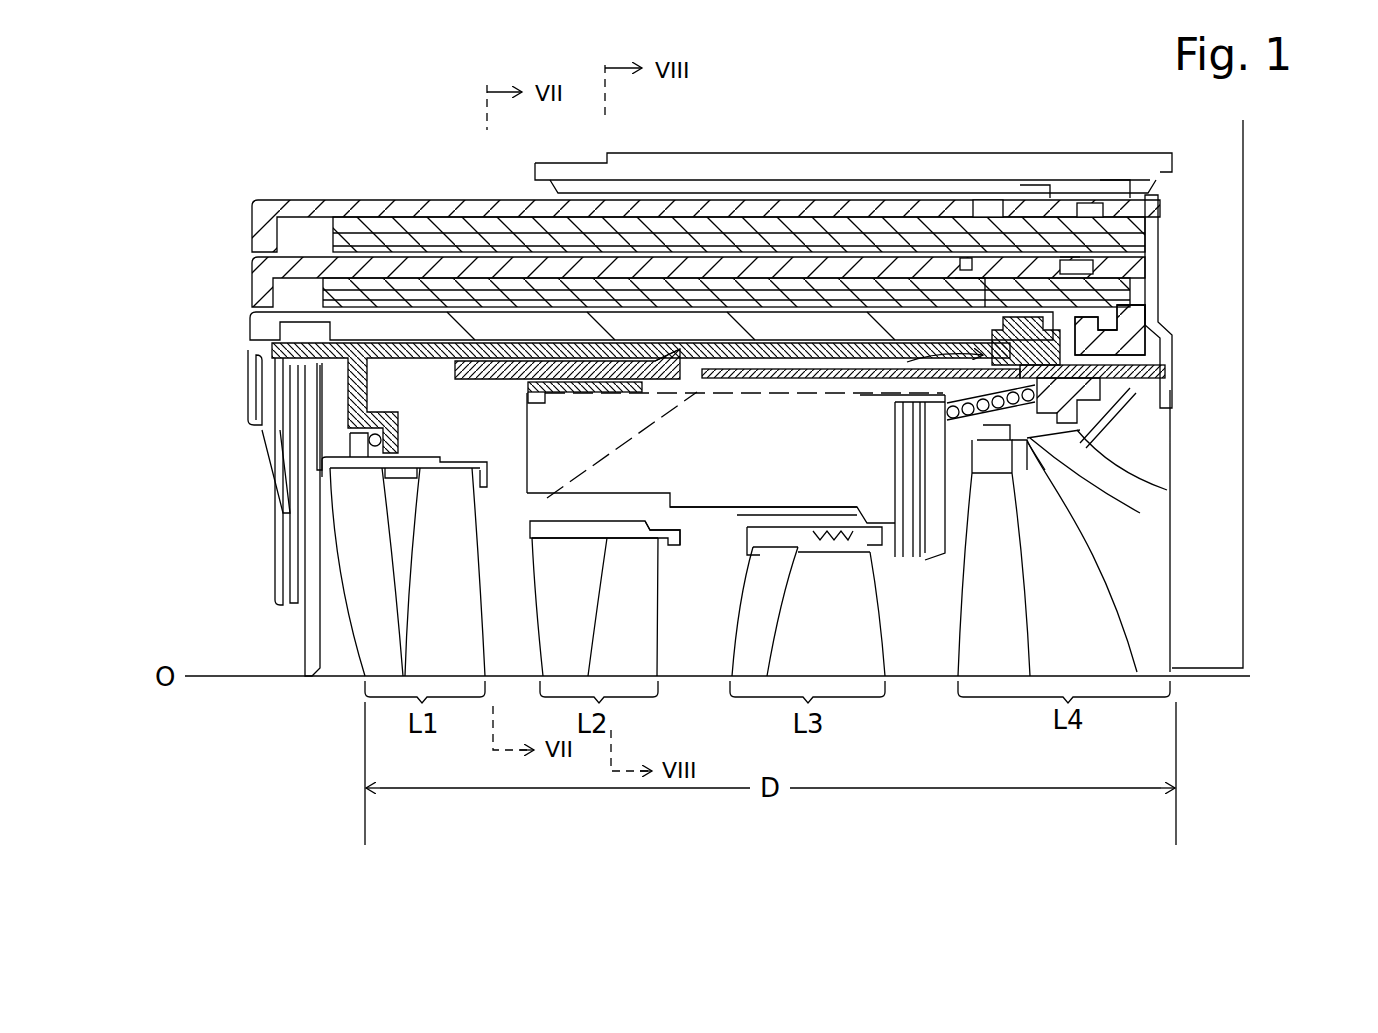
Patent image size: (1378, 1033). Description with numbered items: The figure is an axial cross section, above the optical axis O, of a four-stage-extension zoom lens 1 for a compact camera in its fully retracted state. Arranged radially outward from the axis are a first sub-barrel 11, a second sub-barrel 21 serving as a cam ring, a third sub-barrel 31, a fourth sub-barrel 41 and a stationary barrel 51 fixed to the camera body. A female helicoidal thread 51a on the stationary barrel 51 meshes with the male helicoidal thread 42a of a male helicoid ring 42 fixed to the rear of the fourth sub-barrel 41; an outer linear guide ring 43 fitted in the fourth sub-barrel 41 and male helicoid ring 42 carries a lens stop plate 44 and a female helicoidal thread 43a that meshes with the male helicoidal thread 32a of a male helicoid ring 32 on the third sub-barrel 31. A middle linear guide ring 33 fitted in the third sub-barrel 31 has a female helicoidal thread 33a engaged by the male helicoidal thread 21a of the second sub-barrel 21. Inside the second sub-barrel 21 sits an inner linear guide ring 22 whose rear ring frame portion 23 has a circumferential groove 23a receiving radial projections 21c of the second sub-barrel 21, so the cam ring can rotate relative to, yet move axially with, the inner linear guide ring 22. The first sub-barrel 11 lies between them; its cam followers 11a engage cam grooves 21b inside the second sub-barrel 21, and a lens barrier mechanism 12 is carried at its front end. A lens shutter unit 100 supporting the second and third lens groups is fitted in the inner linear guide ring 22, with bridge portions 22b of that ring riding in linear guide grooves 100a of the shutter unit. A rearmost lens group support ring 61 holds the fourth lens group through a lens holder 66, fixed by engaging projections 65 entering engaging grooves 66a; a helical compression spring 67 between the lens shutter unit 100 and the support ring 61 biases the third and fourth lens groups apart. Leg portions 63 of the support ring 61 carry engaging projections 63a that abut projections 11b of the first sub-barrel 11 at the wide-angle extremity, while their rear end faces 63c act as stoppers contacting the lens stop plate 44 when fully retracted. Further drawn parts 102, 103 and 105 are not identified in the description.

The 4-stage-extension zoom lens 1 is at (403, 102).
The first sub-barrel 11 is at (272, 350).
The cam followers 11a is at (1012, 318).
The projections 11b is at (918, 372).
The lens barrier mechanism 12 is at (248, 628).
The second sub-barrel 21 is at (262, 318).
The male helicoidal thread 21a is at (957, 300).
The first set of cam grooves 21b is at (1165, 372).
The radial projections 21c is at (1130, 310).
The inner linear guide ring 22 is at (1145, 345).
The ring frame portion 23 is at (1110, 330).
The bridge portions 22b is at (528, 407).
The circumferential groove 23a is at (1125, 320).
The third sub-barrel 31 is at (270, 270).
The male helicoid ring 32 is at (1148, 262).
The male helicoidal thread 32a is at (1068, 258).
The middle linear guide ring 33 is at (1135, 297).
The female helicoidal thread 33a is at (770, 300).
The fourth sub-barrel 41 is at (278, 210).
The male helicoid ring 42 is at (1110, 190).
The male helicoidal thread 42a is at (1030, 185).
The outer linear guide ring 43 is at (1150, 205).
The female helicoidal thread 43a is at (912, 225).
The lens stop plate 44 is at (1172, 340).
The stationary barrel 51 is at (842, 170).
The female helicoidal thread 51a is at (877, 190).
The rearmost lens group support ring 61 is at (1107, 448).
The leg portions 63 is at (752, 380).
The engaging projection 63a is at (697, 388).
The rear end face 63c is at (1110, 385).
The engaging projections 65 is at (1140, 513).
The lens holder 66 is at (1130, 395).
The engaging grooves 66a is at (1167, 490).
The helical compression spring 67 is at (1028, 442).
The lens shutter unit 100 is at (545, 442).
The linear guide grooves 100a is at (591, 457).
The second lens group frame 102 is at (728, 530).
The lens frame projection 103 is at (680, 548).
The leaf spring 105 is at (908, 568).